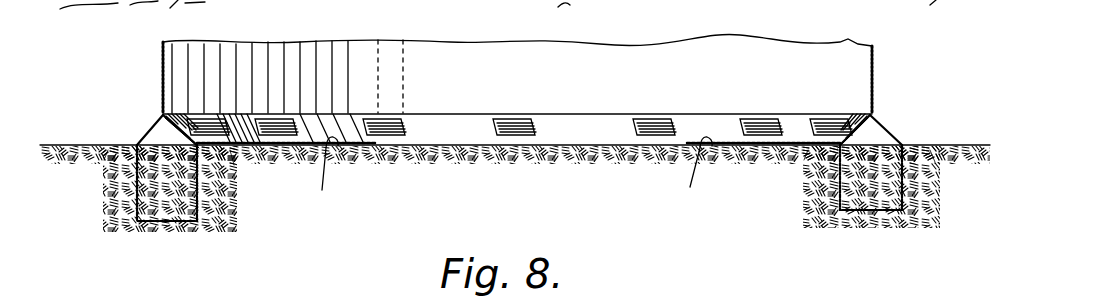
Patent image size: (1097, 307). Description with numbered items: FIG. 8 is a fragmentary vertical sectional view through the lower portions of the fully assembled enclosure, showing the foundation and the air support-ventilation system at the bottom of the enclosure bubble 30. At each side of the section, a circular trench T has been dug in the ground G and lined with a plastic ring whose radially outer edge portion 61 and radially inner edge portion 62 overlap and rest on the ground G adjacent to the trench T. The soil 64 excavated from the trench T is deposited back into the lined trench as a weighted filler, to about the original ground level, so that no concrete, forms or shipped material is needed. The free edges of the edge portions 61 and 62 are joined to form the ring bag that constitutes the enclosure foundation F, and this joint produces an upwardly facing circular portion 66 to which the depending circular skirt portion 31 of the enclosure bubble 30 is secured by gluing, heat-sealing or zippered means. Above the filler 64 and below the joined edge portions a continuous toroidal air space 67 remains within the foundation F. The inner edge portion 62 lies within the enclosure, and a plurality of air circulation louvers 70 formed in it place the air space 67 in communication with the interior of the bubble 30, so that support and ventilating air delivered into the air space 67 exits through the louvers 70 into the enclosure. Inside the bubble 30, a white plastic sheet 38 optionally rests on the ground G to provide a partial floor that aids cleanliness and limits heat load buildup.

The plastic enclosure bubble 30 is at (732, 32).
The depending circular skirt portion 31 is at (168, 78).
The white plastic sheet 38 is at (520, 177).
The radially outer edge portion 61 is at (148, 133).
The radially inner edge portion 62 is at (220, 150).
The soil 64 is at (143, 230).
The upwardly facing circular portion 66 is at (168, 110).
The toroidal air space 67 is at (161, 132).
The air circulation louvers 70 is at (280, 119).
The enclosure foundation F is at (128, 143).
The ground G is at (118, 197).
The circular trench T is at (188, 198).